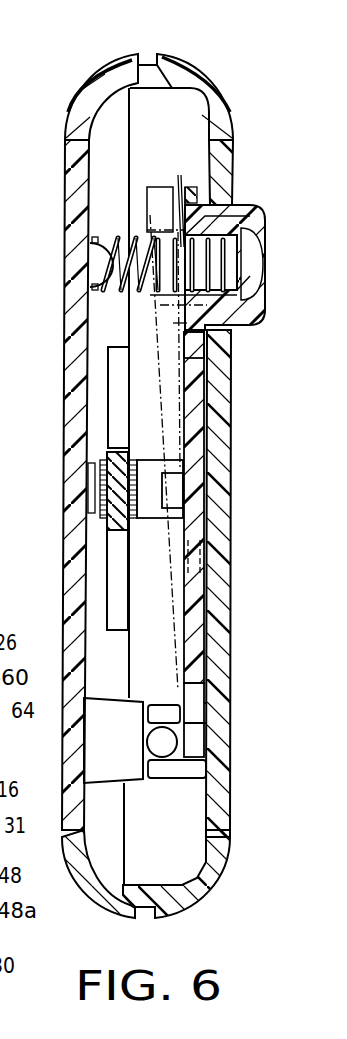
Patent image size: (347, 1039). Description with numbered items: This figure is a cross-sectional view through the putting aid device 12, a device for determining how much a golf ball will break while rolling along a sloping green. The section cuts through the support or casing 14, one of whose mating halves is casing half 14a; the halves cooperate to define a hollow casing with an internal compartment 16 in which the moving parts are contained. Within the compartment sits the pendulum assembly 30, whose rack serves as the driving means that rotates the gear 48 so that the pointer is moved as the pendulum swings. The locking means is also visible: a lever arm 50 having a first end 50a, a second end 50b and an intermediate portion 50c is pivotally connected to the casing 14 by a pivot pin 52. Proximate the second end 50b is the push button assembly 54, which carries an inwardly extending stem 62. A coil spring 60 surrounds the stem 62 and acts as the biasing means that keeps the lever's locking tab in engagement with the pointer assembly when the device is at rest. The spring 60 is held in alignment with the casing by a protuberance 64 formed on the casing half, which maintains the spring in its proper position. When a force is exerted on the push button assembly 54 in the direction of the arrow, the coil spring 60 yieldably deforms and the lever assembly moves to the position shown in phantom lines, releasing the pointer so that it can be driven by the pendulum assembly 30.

The putting aid device 12 is at (183, 53).
The casing 14 is at (235, 106).
The casing half 14a is at (208, 893).
The internal compartment 16 is at (103, 660).
The pendulum assembly 30 is at (112, 377).
The gear 48 is at (97, 480).
The lever arm 50 is at (197, 418).
The first end of lever arm 50a is at (187, 740).
The second end of lever arm 50b is at (192, 345).
The intermediate portion of lever arm 50c is at (195, 557).
The pivot pin 52 is at (165, 748).
The push button assembly 54 is at (252, 207).
The coil spring 60 is at (92, 239).
The stem 62 is at (172, 197).
The protuberance 64 is at (100, 267).